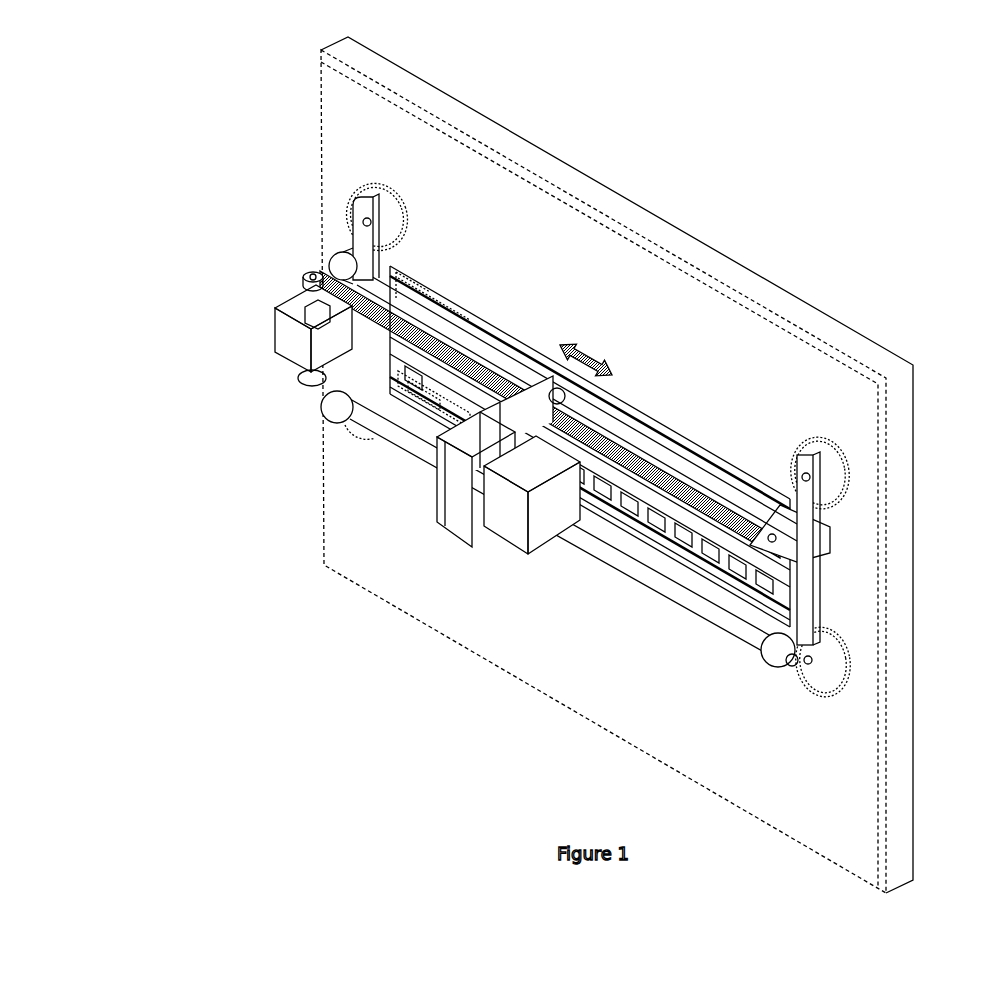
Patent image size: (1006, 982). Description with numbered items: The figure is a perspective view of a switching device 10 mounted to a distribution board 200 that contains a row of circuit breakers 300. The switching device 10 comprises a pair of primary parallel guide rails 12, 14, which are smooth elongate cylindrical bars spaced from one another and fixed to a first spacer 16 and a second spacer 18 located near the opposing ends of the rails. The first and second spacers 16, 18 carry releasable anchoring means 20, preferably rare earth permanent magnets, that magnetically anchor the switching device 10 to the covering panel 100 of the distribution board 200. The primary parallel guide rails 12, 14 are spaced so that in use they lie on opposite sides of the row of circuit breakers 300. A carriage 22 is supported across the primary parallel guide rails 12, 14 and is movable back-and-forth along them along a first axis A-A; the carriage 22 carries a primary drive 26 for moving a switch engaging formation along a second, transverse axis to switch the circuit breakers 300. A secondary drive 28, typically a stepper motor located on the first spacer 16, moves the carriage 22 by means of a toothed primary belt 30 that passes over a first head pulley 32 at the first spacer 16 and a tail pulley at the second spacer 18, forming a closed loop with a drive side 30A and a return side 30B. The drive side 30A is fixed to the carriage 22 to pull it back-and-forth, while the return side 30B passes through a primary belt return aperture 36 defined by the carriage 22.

The switching device 10 is at (554, 381).
The primary parallel guide rail 12 is at (698, 477).
The primary parallel guide rail 14 is at (672, 592).
The first spacer 16 is at (362, 233).
The second spacer 18 is at (812, 607).
The releasable anchoring means 20 is at (382, 215).
The carriage 22 is at (501, 417).
The primary drive 26 is at (503, 518).
The secondary drive 28 is at (282, 338).
The primary belt 30 is at (838, 545).
The drive side 30A is at (417, 410).
The return side 30B is at (425, 340).
The first head pulley 32 is at (311, 272).
The primary belt return aperture 36 is at (550, 390).
The covering panel 100 is at (802, 397).
The distribution board 200 is at (893, 318).
The circuit breakers 300 is at (632, 517).